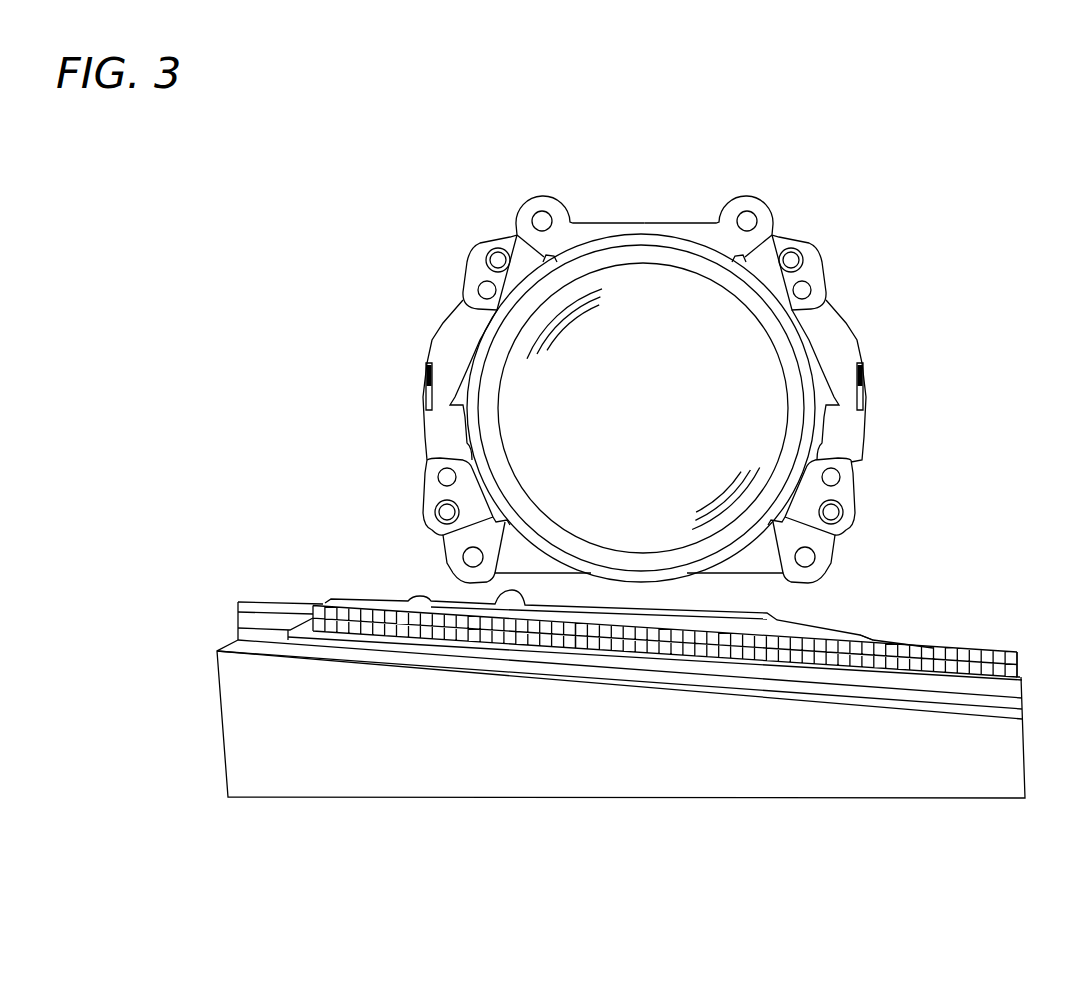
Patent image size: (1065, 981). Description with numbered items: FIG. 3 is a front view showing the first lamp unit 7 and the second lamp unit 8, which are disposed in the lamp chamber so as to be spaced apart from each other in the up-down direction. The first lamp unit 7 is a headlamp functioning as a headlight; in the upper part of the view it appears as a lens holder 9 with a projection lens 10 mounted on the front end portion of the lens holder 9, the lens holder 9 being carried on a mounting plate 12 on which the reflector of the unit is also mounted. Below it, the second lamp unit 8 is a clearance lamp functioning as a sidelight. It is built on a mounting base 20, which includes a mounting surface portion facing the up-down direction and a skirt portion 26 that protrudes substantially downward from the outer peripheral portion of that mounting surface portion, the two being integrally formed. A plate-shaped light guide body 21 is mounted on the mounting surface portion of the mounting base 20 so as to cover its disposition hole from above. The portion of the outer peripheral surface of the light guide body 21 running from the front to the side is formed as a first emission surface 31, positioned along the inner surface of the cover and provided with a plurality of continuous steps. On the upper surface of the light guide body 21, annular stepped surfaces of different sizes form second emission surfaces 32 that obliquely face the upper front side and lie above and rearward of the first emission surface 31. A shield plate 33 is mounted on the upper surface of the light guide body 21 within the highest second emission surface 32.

The first lamp unit 7 is at (771, 217).
The second lamp unit 8 is at (922, 645).
The lens holder 9 is at (792, 362).
The projection lens 10 is at (758, 418).
The mounting plate 12 is at (742, 206).
The mounting base 20 is at (753, 780).
The light guide body 21 is at (905, 645).
The skirt portion 26 is at (838, 782).
The first emission surface 31 is at (575, 632).
The second emission surfaces 32 is at (838, 634).
The shield plate 33 is at (423, 595).